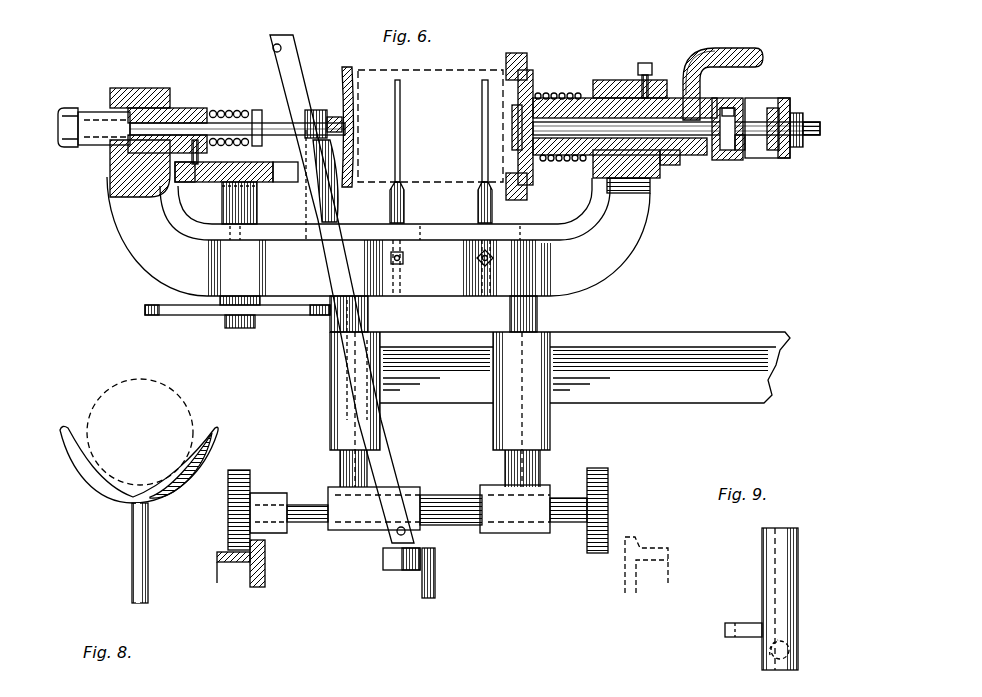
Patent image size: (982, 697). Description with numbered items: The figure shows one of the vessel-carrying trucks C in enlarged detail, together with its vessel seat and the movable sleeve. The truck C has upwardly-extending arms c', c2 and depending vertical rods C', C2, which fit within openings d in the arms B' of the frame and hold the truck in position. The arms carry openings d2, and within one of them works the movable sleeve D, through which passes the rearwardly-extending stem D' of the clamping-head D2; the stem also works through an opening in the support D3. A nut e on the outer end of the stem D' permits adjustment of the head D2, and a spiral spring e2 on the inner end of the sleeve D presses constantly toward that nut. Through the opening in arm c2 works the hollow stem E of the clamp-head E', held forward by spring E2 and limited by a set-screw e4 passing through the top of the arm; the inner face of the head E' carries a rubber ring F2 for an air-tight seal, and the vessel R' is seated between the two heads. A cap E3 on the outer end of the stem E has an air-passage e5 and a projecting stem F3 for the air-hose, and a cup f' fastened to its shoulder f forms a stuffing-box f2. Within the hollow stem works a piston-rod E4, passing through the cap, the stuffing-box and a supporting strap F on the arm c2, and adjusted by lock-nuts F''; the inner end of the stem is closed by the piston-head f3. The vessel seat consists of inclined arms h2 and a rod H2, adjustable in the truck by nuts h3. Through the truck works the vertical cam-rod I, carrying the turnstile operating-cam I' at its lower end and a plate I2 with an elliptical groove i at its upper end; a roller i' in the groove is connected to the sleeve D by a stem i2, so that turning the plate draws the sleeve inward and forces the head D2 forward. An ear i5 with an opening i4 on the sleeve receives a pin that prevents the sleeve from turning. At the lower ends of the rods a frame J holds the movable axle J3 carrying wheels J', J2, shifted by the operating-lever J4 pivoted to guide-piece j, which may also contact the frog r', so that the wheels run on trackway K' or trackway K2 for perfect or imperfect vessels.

In FIG. 6, the nut e is at (70, 110).
In FIG. 6, the movable sleeve D is at (211, 99).
In FIG. 9, the movable sleeve D is at (794, 599).
In FIG. 6, the openings in arms d2 is at (170, 102).
In FIG. 6, the spiral spring e2 is at (233, 110).
In FIG. 6, the roller i' is at (211, 150).
In FIG. 6, the plate I2 is at (270, 182).
In FIG. 6, the groove i is at (283, 158).
In FIG. 6, the stem i2 is at (198, 183).
In FIG. 6, the vertical cam-rod I is at (206, 273).
In FIG. 6, the upwardly-extending arm c' is at (139, 236).
In FIG. 6, the upwardly-extending arm c2 is at (627, 232).
In FIG. 6, the vessel-carrying truck C is at (385, 275).
In FIG. 6, the set-screws or nuts h3 is at (478, 258).
In FIG. 6, the operating-cam I' is at (237, 327).
In FIG. 6, the vertical rod C2 is at (370, 313).
In FIG. 6, the vertical rod C' is at (534, 391).
In FIG. 6, the frame arms B' is at (560, 367).
In FIG. 6, the rearwardly-extending stem or rod D' is at (302, 133).
In FIG. 6, the support D3 is at (315, 110).
In FIG. 6, the clamping-head D2 is at (347, 66).
In FIG. 6, the roll R' is at (430, 112).
In FIG. 8, the roll R' is at (140, 432).
In FIG. 6, the inclined arms h2 is at (401, 128).
In FIG. 8, the inclined arms h2 is at (92, 472).
In FIG. 6, the rod H2 is at (478, 204).
In FIG. 8, the rod H2 is at (147, 558).
In FIG. 6, the piston-head f3 is at (512, 128).
In FIG. 6, the clamp-head E' is at (540, 105).
In FIG. 6, the rubber ring F2 is at (506, 60).
In FIG. 6, the opening d is at (588, 98).
In FIG. 6, the set-screw e4 is at (648, 64).
In FIG. 6, the spiral spring E2 is at (560, 163).
In FIG. 6, the rearwardly-extending hollow stem E is at (608, 170).
In FIG. 6, the cap E3 is at (672, 166).
In FIG. 6, the air-passage way e5 is at (765, 55).
In FIG. 6, the projecting stem of cap F3 is at (710, 50).
In FIG. 6, the shoulder f is at (730, 117).
In FIG. 6, the piston-rod E4 is at (758, 112).
In FIG. 6, the supporting brace or strap F is at (806, 111).
In FIG. 6, the lock-nuts F'' is at (791, 144).
In FIG. 6, the cup f' is at (733, 164).
In FIG. 6, the stuffing-box f2 is at (722, 160).
In FIG. 6, the operating-lever J4 is at (278, 35).
In FIG. 6, the wheel J' is at (278, 497).
In FIG. 6, the frame J is at (439, 493).
In FIG. 6, the axle J3 is at (450, 526).
In FIG. 6, the wheel J2 is at (608, 472).
In FIG. 6, the guide-piece j is at (383, 548).
In FIG. 6, the frog r' is at (441, 573).
In FIG. 6, the trackway K' is at (257, 563).
In FIG. 6, the trackway K2 is at (650, 552).
In FIG. 9, the ear of sleeve i5 is at (730, 623).
In FIG. 9, the opening i4 is at (743, 638).